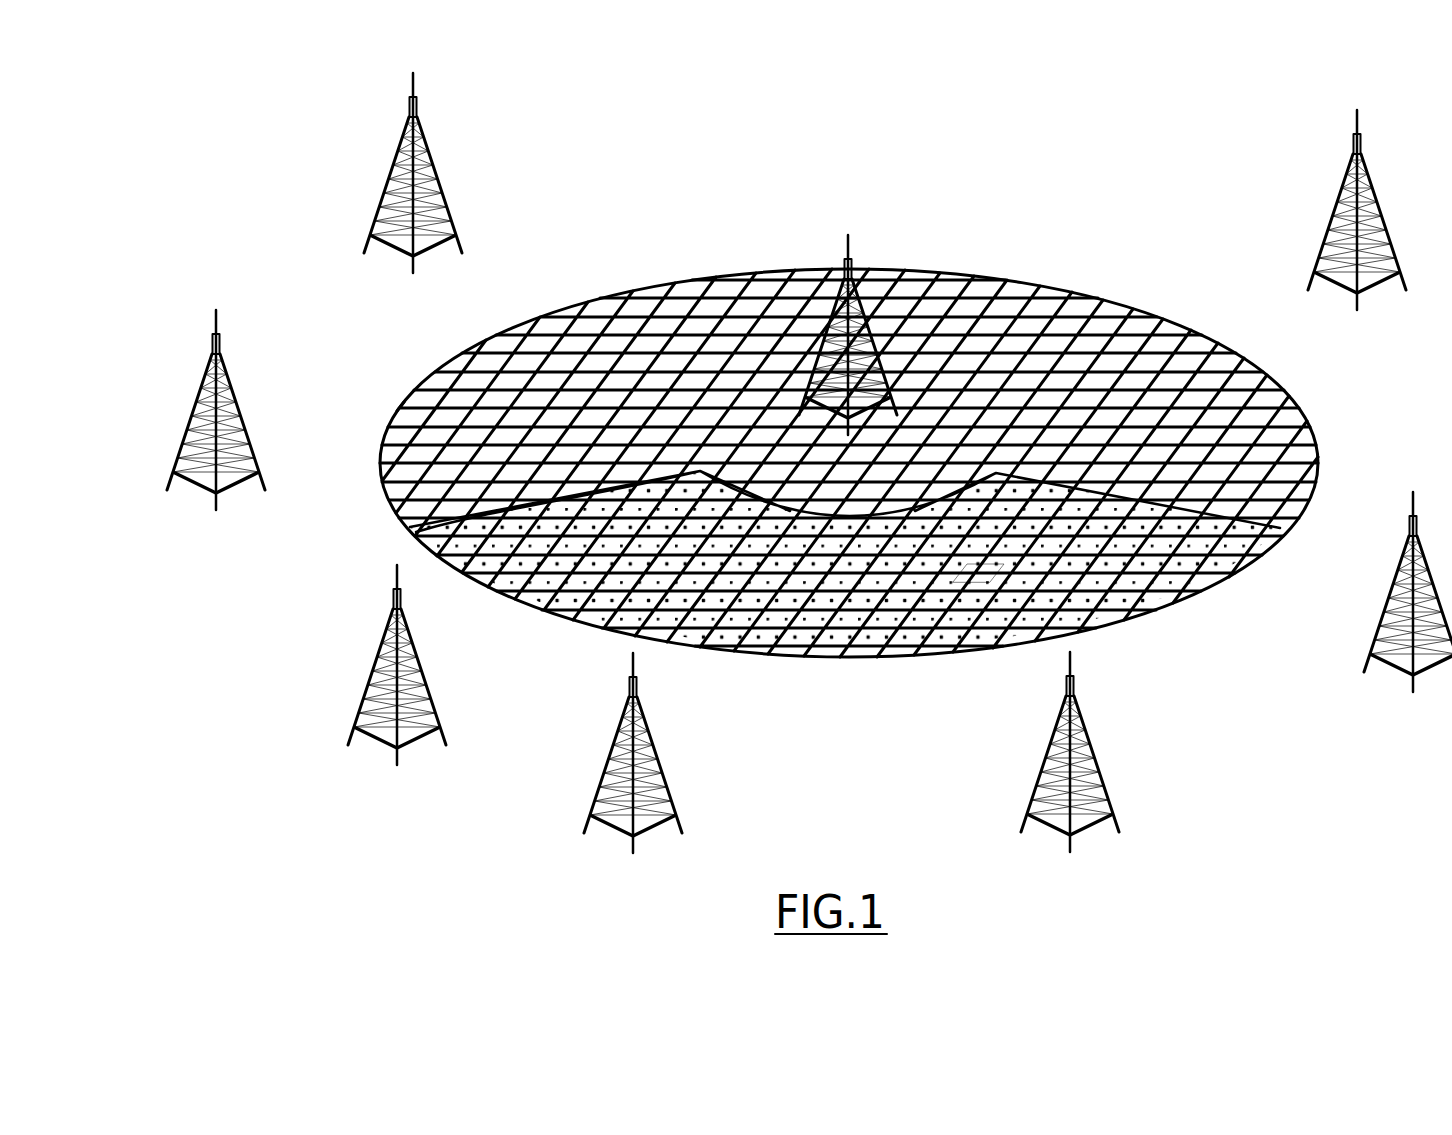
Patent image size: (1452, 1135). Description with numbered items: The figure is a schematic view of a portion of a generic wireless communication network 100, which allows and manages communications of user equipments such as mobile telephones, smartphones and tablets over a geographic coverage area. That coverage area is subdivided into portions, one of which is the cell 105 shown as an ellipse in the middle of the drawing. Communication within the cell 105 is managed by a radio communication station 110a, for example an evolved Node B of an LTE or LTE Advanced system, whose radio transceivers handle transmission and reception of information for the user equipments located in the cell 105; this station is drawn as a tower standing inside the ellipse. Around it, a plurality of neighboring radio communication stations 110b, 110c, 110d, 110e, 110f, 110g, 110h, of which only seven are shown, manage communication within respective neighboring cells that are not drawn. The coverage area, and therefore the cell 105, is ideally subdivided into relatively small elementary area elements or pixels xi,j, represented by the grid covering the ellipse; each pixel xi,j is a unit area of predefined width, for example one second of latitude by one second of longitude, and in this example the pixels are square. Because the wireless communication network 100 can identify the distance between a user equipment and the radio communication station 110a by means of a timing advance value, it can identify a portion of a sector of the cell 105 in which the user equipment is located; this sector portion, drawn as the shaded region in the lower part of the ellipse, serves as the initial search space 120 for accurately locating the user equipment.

The wireless communication network 100 is at (213, 86).
The cell 105 is at (1060, 290).
The radio communication station 110a is at (850, 262).
The neighboring radio communication station 110b is at (1353, 160).
The neighboring radio communication station 110c is at (1413, 676).
The neighboring radio communication station 110d is at (1111, 815).
The neighboring radio communication station 110e is at (592, 816).
The neighboring radio communication station 110f is at (356, 729).
The neighboring radio communication station 110g is at (216, 493).
The neighboring radio communication station 110h is at (372, 243).
The initial search space 120 is at (1200, 580).
The pixel xi,j is at (953, 582).